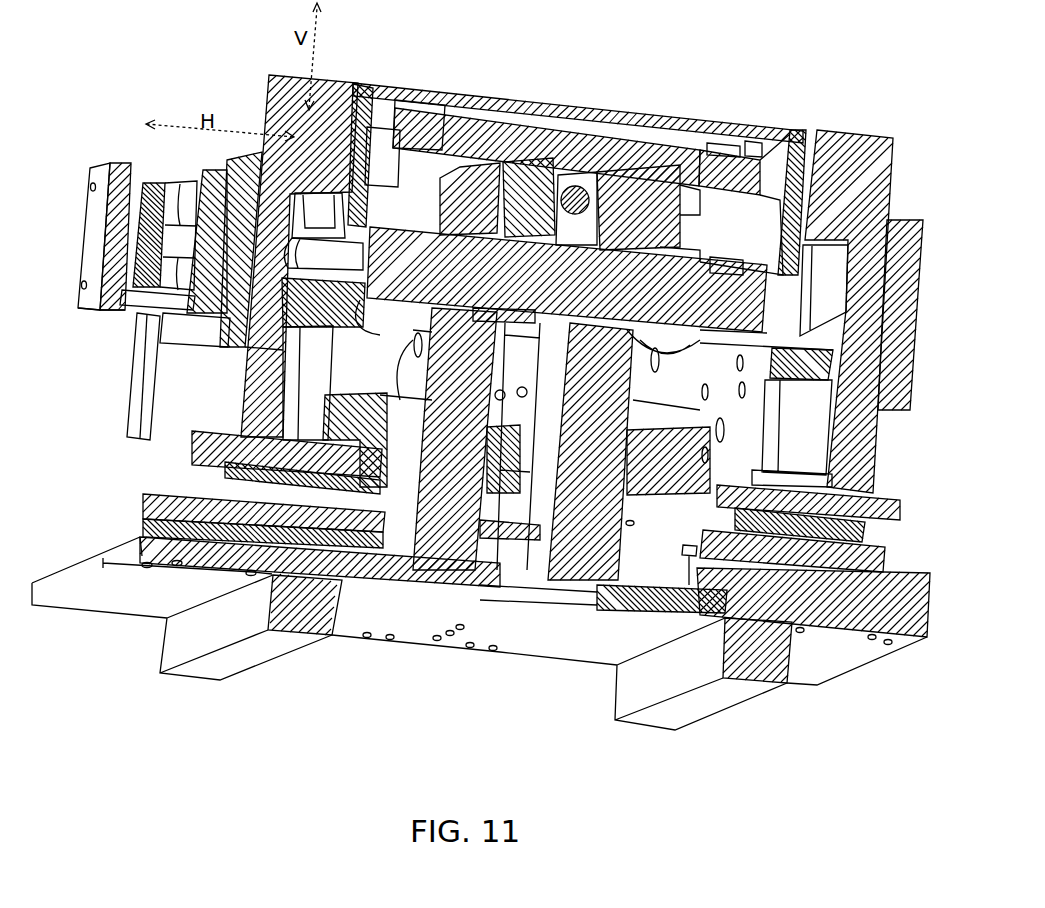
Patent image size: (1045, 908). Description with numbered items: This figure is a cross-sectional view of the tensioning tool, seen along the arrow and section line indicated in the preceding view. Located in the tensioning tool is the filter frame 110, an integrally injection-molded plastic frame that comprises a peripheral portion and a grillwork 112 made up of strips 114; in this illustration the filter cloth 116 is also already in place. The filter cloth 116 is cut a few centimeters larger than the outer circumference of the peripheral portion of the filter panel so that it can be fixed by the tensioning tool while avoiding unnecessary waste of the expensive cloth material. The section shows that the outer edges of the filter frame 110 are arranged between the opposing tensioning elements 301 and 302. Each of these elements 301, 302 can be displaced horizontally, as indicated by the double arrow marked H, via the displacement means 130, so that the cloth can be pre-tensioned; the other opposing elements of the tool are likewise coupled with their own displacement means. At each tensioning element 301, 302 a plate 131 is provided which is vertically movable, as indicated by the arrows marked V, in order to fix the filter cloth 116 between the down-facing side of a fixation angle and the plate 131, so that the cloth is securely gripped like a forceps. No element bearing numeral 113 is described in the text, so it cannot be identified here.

The filter frame 110 is at (752, 143).
The grillwork 112 is at (685, 140).
The intermediate plate 113 is at (603, 133).
The strips 114 is at (428, 103).
The filter cloth 116 is at (540, 110).
The displacement means 130 is at (207, 230).
The plate 131 is at (297, 400).
The tensioning element 301 is at (280, 108).
The tensioning element 302 is at (857, 140).